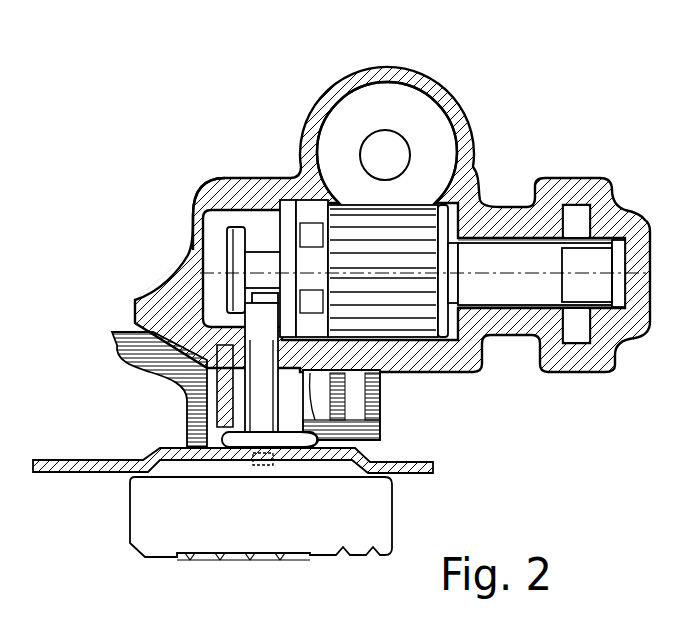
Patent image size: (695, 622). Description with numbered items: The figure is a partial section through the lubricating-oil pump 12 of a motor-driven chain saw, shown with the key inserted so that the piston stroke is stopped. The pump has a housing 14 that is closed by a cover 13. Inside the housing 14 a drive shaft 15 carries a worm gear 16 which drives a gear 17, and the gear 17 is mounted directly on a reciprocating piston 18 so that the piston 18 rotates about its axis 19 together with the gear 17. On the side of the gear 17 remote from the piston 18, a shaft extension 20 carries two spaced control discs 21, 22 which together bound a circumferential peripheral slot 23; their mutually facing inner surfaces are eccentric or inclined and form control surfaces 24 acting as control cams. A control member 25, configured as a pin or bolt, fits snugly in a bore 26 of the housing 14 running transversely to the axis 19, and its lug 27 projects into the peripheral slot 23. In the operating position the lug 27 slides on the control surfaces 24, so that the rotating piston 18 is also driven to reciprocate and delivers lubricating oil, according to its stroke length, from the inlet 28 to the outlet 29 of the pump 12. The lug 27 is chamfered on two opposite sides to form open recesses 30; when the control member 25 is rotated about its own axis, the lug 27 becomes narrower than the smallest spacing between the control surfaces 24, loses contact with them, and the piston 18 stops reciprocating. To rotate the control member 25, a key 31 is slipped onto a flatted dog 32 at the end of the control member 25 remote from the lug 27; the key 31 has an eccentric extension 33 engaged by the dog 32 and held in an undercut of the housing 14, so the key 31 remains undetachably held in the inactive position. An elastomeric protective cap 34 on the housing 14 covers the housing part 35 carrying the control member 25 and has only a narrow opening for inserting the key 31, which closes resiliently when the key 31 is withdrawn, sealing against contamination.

The lubricating-oil pump 12 is at (233, 77).
The cover 13 is at (193, 198).
The housing 14 is at (480, 185).
The drive shaft 15 is at (388, 131).
The bearing eye 16 is at (437, 118).
The gear 17 is at (433, 338).
The reciprocating piston 18 is at (502, 275).
The axis 19 is at (547, 276).
The shaft extension 20 is at (252, 262).
The control disc 21 is at (228, 243).
The control disc 22 is at (348, 322).
The peripheral slot 23 is at (280, 246).
The control surfaces 24 is at (296, 243).
The control member 25 is at (255, 377).
The bore 26 is at (220, 413).
The lug 27 is at (300, 305).
The inlet 28 is at (582, 333).
The outlet 29 is at (592, 208).
The open recesses 30 is at (137, 300).
The key 31 is at (266, 538).
The dog 32 is at (258, 460).
The eccentric extension 33 is at (306, 444).
The protective cap 34 is at (113, 360).
The housing part 35 is at (187, 389).